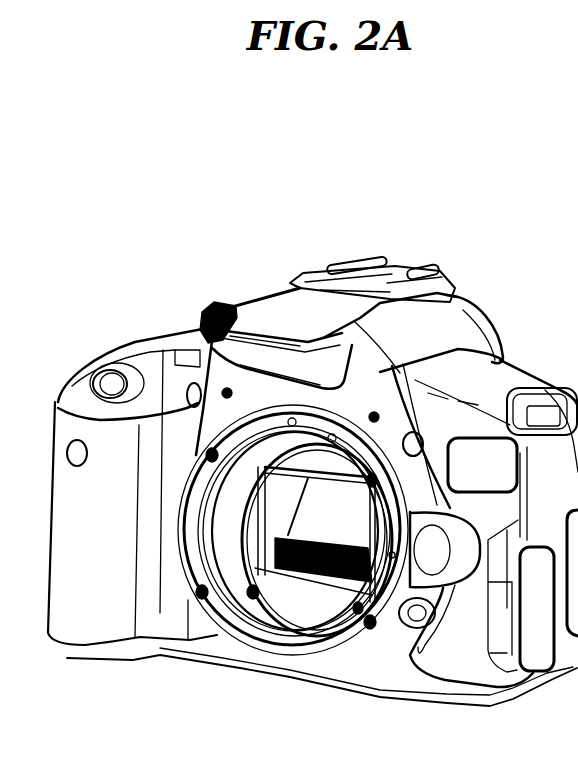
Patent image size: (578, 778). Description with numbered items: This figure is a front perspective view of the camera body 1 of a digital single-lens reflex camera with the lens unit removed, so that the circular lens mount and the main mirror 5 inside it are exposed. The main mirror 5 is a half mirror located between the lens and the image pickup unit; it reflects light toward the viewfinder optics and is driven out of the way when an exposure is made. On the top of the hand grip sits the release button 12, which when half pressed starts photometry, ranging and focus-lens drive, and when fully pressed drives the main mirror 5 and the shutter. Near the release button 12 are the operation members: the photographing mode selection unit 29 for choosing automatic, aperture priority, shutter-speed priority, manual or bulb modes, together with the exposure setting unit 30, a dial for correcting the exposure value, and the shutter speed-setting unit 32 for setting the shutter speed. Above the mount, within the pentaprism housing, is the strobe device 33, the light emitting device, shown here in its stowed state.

The camera body 1 is at (487, 368).
The main mirror 5 is at (335, 528).
The release button 12 is at (100, 391).
The photographing mode selection unit 29 is at (223, 302).
The exposure setting unit 30 is at (128, 340).
The shutter speed-setting unit 32 is at (128, 340).
The strobe device 33 is at (270, 310).